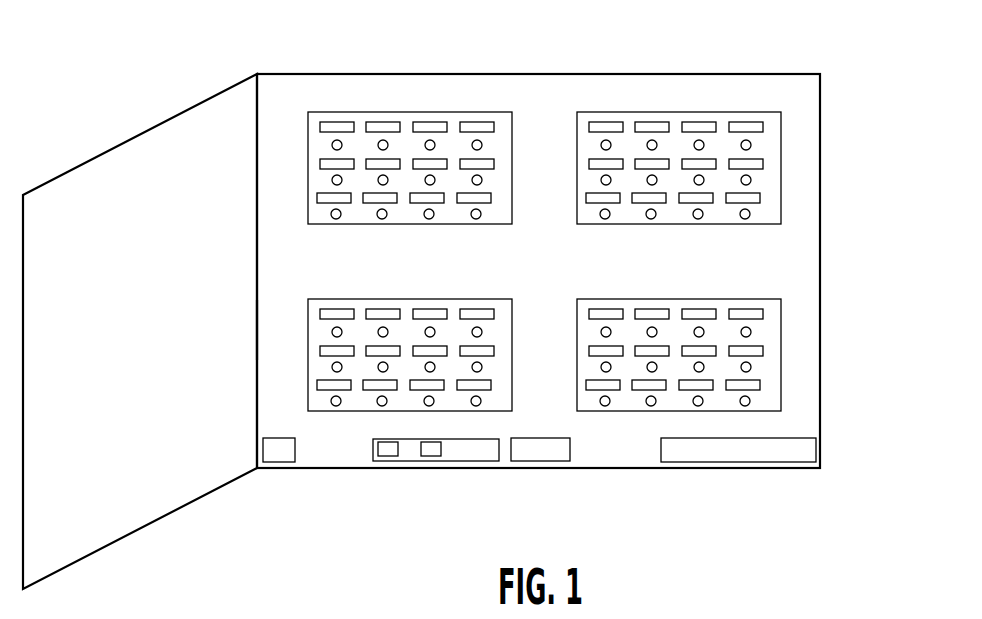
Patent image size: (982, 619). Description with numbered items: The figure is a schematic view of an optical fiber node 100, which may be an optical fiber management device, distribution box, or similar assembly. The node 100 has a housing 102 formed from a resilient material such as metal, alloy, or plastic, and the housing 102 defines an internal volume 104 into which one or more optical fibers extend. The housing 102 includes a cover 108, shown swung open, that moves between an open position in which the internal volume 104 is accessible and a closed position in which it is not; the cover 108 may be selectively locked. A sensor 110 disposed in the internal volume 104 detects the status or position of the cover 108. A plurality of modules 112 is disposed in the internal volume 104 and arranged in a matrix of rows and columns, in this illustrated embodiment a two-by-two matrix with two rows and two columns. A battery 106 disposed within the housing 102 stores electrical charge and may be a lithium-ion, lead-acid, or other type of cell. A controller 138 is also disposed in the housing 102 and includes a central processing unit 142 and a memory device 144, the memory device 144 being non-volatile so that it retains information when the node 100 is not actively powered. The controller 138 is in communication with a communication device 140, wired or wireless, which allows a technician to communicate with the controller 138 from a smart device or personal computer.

The optical fiber node 100 is at (146, 90).
The housing 102 is at (821, 123).
The internal volume 104 is at (277, 328).
The battery 106 is at (788, 448).
The cover 108 is at (143, 483).
The sensor 110 is at (283, 450).
The modules 112 is at (617, 112).
The controller 138 is at (550, 448).
The communication device 140 is at (467, 458).
The central processing unit 142 is at (387, 452).
The memory device 144 is at (432, 452).